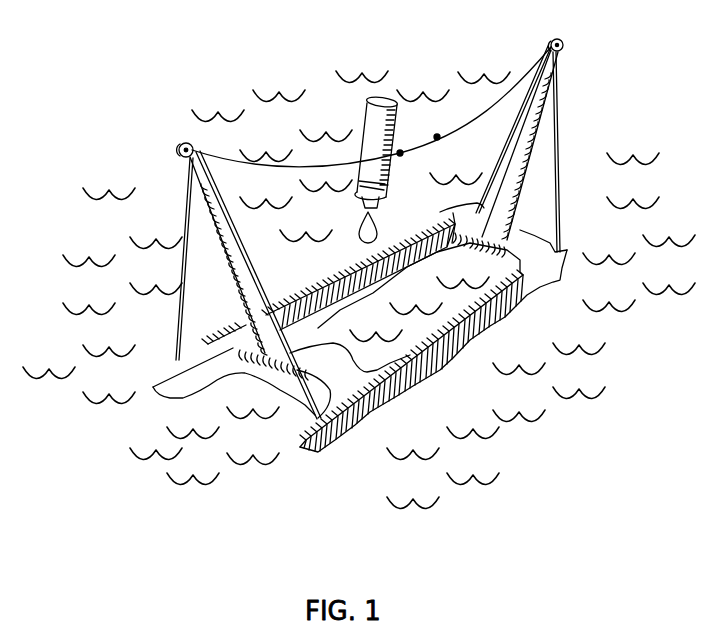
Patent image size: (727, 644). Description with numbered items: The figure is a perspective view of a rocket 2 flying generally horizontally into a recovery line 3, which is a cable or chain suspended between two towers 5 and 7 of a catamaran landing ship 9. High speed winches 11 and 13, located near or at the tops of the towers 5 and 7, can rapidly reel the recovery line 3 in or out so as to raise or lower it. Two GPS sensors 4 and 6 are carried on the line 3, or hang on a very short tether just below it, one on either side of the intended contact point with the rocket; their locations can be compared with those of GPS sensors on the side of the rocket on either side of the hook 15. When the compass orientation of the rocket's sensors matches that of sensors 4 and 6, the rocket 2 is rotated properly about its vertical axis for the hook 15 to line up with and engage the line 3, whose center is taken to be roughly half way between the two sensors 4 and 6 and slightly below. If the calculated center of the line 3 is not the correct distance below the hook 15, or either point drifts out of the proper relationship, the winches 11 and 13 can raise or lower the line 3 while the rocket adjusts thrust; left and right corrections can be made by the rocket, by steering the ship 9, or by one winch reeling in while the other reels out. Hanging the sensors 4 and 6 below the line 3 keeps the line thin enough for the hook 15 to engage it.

The rocket 2 is at (388, 177).
The recovery line 3 is at (333, 167).
The GPS sensor 4 is at (400, 153).
The tower 5 is at (255, 251).
The GPS sensor 6 is at (437, 137).
The tower 7 is at (530, 167).
The catamaran landing ship 9 is at (440, 370).
The high speed winch 11 is at (181, 143).
The high speed winch 13 is at (556, 38).
The hook 15 is at (395, 129).